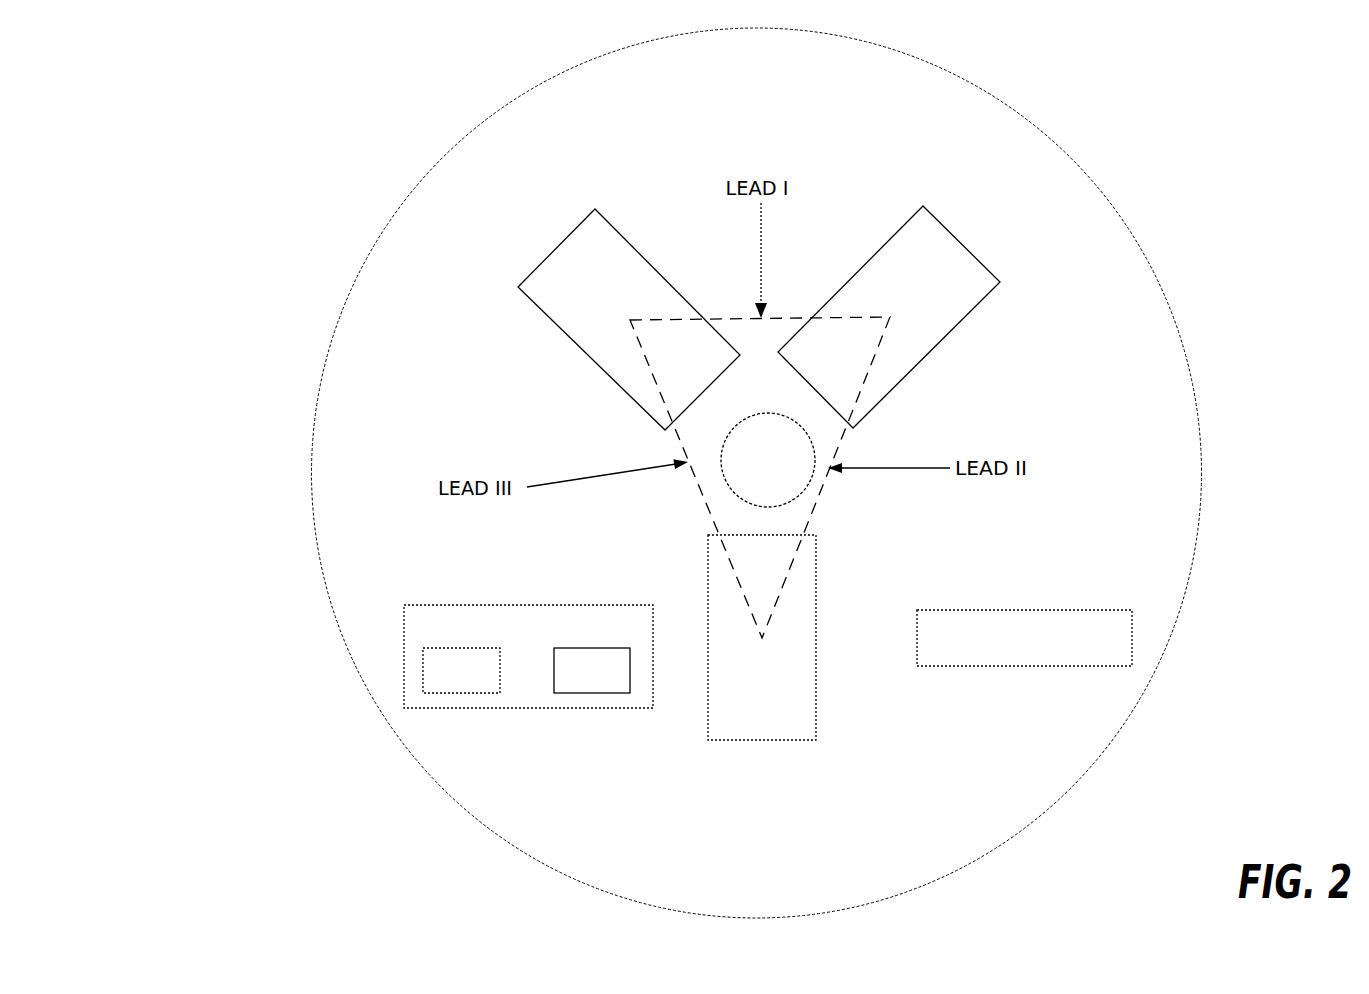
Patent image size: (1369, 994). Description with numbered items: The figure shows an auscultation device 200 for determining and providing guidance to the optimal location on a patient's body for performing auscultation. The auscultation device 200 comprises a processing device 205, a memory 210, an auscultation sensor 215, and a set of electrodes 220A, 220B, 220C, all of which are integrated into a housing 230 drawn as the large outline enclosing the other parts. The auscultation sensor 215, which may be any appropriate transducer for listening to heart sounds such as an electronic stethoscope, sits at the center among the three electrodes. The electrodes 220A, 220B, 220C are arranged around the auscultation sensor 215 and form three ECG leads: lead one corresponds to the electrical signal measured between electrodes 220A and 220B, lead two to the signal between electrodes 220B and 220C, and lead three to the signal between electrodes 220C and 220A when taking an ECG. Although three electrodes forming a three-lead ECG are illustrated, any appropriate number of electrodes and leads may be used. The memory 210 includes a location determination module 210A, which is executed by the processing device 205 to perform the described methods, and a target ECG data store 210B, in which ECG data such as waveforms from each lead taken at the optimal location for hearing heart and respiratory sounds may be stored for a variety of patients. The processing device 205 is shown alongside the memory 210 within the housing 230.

The auscultation device 200 is at (310, 118).
The housing 230 is at (1140, 236).
The auscultation sensor 215 is at (768, 460).
The electrode 220A is at (629, 319).
The electrode 220B is at (889, 317).
The electrode 220C is at (762, 637).
The memory 210 is at (528, 656).
The location determination module 210A is at (461, 670).
The target ECG data store 210B is at (592, 670).
The processing device 205 is at (1024, 638).